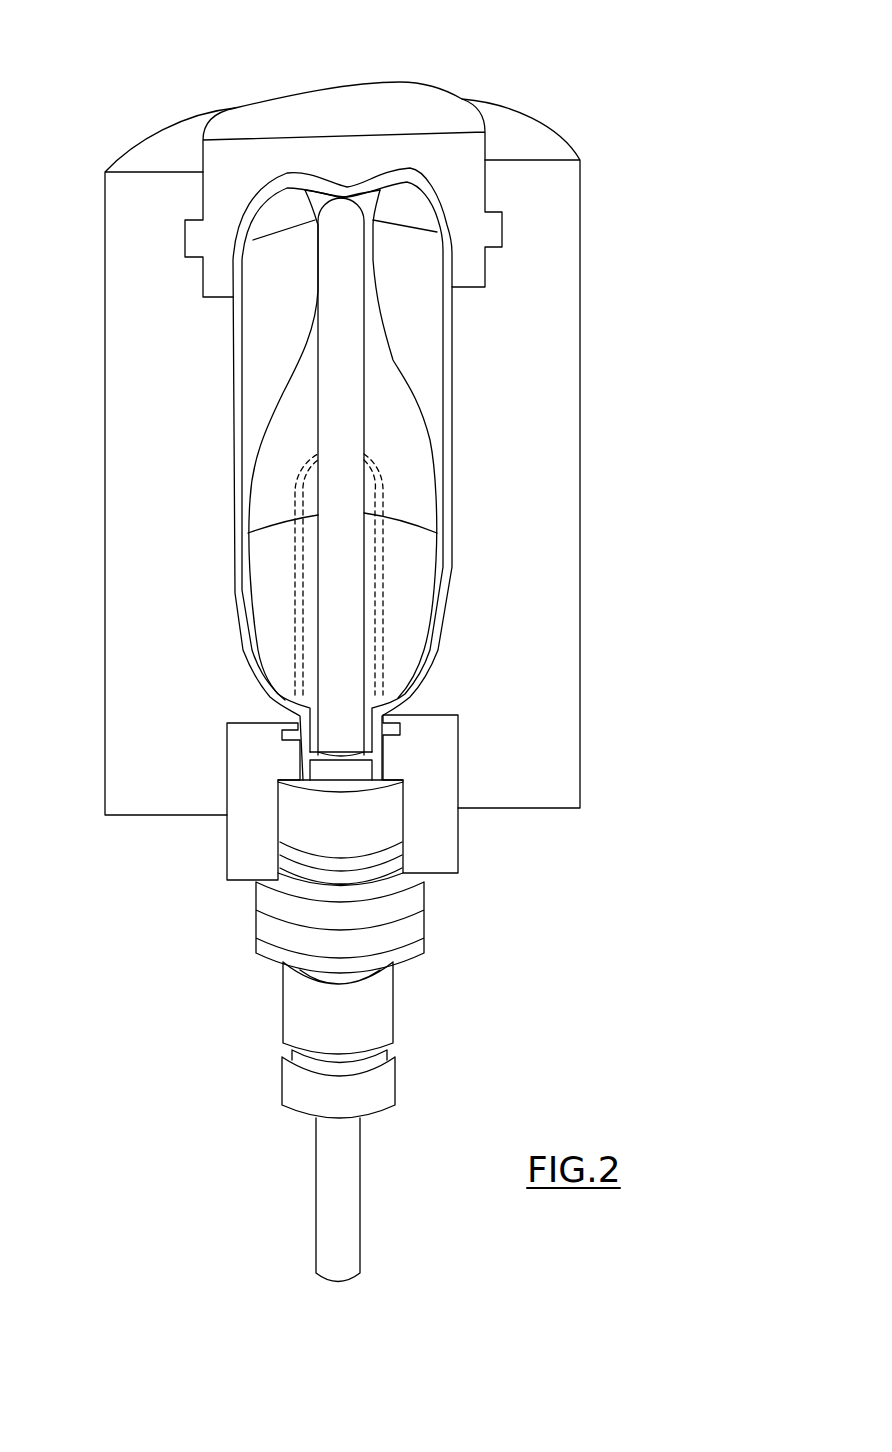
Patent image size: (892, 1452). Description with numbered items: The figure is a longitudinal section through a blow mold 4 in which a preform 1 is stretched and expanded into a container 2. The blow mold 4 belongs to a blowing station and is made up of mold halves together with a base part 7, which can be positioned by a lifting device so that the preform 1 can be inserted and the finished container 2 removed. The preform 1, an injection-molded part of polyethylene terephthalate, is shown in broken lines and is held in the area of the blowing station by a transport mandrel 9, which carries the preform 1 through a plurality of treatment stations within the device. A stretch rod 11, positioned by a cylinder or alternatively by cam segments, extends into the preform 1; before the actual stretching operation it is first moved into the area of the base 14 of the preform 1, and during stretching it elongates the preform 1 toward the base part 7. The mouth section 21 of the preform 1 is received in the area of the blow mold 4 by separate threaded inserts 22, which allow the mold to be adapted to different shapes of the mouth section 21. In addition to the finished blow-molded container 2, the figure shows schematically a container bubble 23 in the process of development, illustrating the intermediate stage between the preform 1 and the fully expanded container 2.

The preform 1 is at (377, 611).
The container 2 is at (450, 388).
The blow mold 4 is at (537, 456).
The base part 7 is at (428, 100).
The transport mandrel 9 is at (413, 940).
The stretch rod 11 is at (315, 1215).
The base 14 is at (330, 450).
The mouth section 21 is at (383, 745).
The threaded inserts 22 is at (440, 833).
The container bubble 23 is at (390, 352).